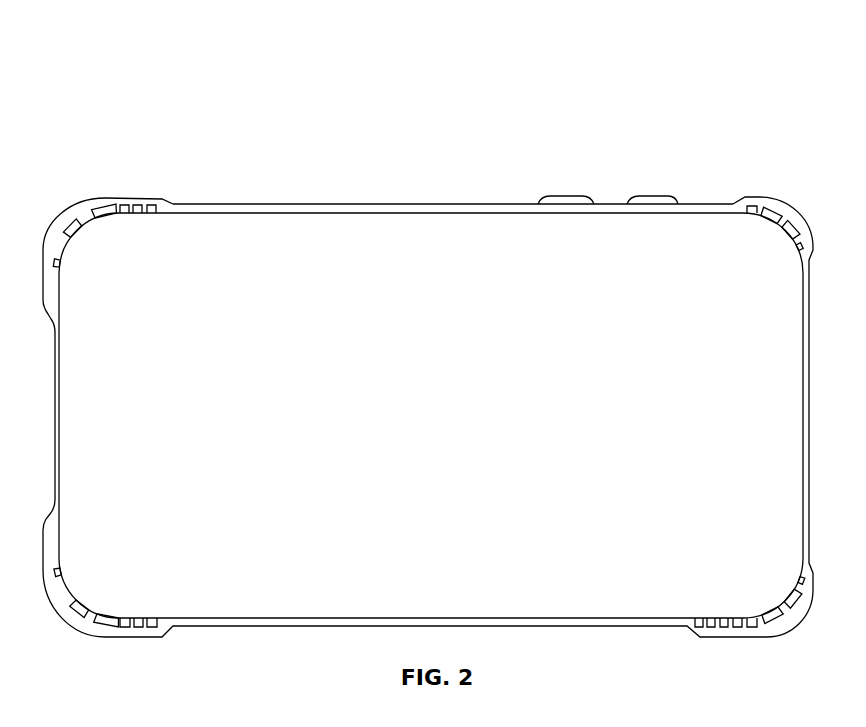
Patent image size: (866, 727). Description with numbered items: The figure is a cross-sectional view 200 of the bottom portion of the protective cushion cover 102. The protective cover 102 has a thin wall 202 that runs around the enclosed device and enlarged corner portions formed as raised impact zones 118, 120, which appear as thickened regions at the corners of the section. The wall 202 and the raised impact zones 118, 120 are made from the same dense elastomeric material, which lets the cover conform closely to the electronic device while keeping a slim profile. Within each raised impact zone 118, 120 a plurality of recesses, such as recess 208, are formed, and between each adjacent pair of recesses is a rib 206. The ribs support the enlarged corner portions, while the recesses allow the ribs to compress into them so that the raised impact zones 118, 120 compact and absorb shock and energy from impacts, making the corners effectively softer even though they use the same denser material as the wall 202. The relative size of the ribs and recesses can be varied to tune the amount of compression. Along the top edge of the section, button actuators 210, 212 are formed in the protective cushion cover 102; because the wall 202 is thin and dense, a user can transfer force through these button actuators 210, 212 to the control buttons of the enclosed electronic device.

The cross-sectional view 200 is at (539, 65).
The protective cover 102 is at (347, 193).
The raised impact zone 118 is at (136, 184).
The raised impact zone 120 is at (783, 194).
The wall 202 is at (248, 210).
The rib 206 is at (147, 206).
The recess 208 is at (82, 208).
The button actuator 210 is at (545, 200).
The button actuator 212 is at (666, 200).